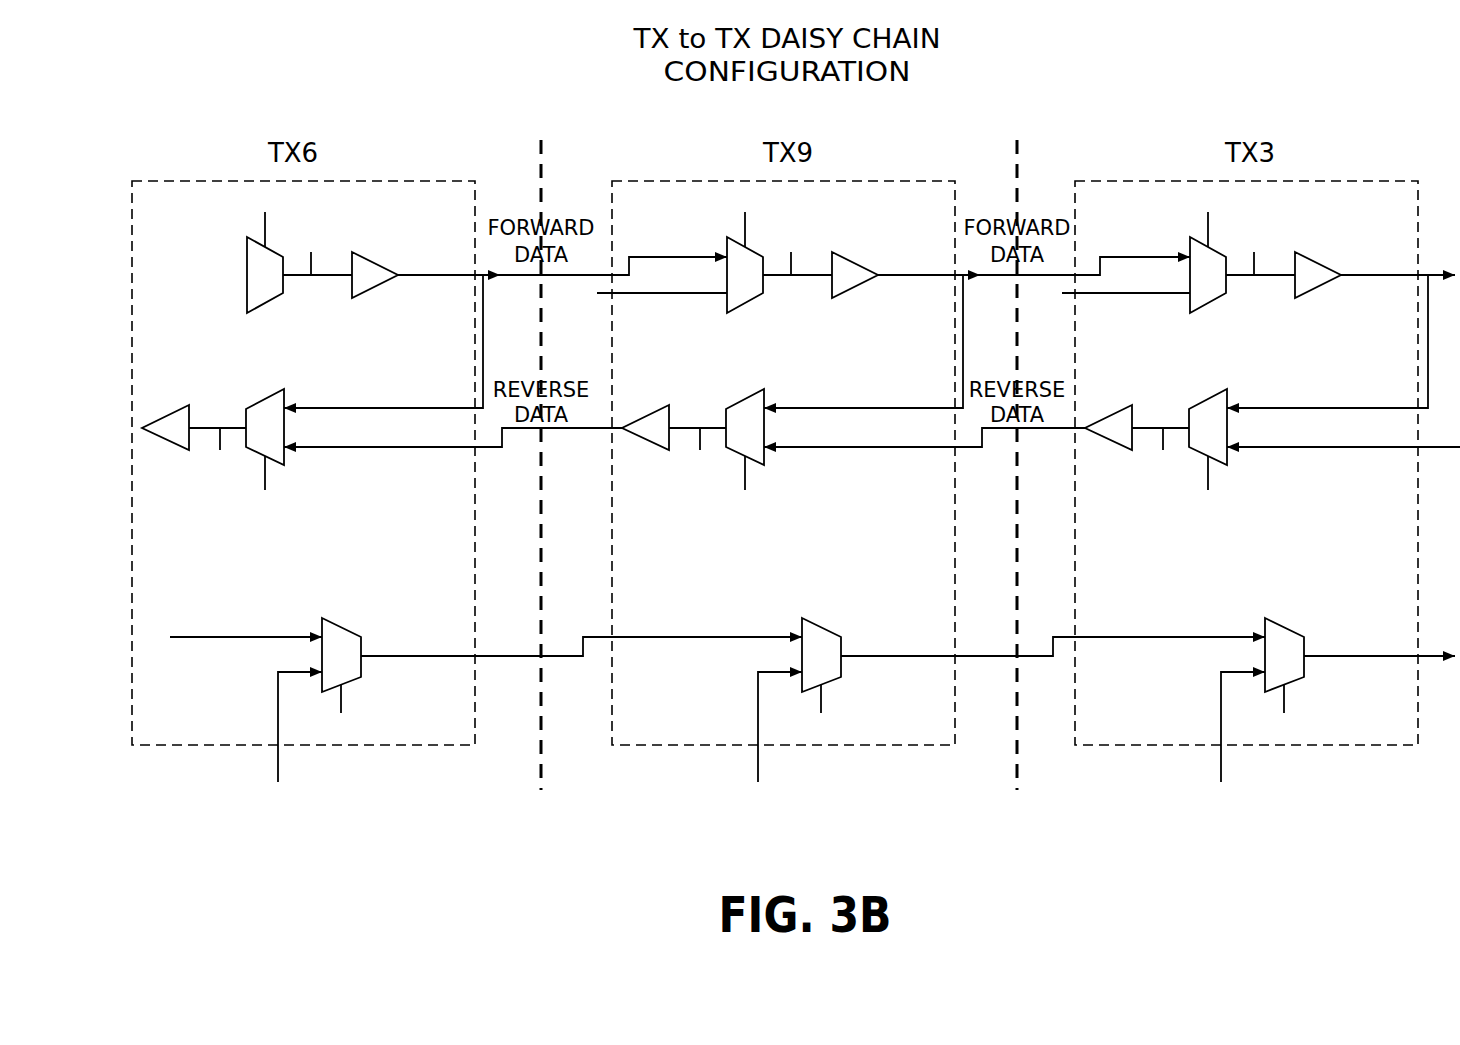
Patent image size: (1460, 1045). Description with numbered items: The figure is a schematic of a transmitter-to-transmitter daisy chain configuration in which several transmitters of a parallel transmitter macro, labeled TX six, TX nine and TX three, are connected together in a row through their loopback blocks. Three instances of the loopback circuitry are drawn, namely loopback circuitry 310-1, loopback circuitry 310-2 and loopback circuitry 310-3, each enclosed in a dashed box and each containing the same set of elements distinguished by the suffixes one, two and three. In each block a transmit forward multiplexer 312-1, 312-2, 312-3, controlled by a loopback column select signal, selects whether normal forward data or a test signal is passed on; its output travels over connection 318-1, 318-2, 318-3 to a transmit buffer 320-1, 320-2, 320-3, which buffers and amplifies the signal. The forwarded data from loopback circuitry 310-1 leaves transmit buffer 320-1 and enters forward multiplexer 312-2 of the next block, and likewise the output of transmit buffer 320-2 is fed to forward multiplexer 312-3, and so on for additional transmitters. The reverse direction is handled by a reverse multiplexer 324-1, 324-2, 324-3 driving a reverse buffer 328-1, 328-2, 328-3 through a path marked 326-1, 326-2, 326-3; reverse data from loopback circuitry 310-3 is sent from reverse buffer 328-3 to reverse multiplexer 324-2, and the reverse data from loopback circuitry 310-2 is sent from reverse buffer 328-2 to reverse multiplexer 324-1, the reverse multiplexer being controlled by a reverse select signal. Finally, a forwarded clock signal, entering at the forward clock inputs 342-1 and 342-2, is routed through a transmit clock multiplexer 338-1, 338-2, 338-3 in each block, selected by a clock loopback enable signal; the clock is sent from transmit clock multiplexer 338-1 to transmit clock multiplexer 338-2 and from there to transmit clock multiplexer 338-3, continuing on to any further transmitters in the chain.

The loopback circuitry 310-1 is at (288, 463).
The loopback circuitry 310-2 is at (768, 463).
The loopback circuitry 310-3 is at (1231, 463).
The transmit forward multiplexer 312-1 is at (265, 305).
The transmit forward multiplexer 312-2 is at (745, 305).
The transmit forward multiplexer 312-3 is at (1208, 305).
The connection 318-1 is at (310, 249).
The connection 318-2 is at (790, 249).
The connection 318-3 is at (1253, 249).
The transmit buffer 320-1 is at (370, 257).
The transmit buffer 320-2 is at (850, 257).
The transmit buffer 320-3 is at (1313, 257).
The reverse multiplexer 324-1 is at (265, 399).
The reverse multiplexer 324-2 is at (745, 399).
The reverse multiplexer 324-3 is at (1208, 399).
The reverse data path 326-1 is at (227, 452).
The reverse data path 326-2 is at (707, 452).
The reverse data path 326-3 is at (1170, 452).
The reverse buffer 328-1 is at (180, 452).
The reverse buffer 328-2 is at (660, 452).
The reverse buffer 328-3 is at (1123, 452).
The transmit clock multiplexer 338-1 is at (352, 684).
The transmit clock multiplexer 338-2 is at (832, 684).
The transmit clock multiplexer 338-3 is at (1295, 684).
The forward clock input 342-1 is at (252, 637).
The forward clock input 342-2 is at (732, 637).